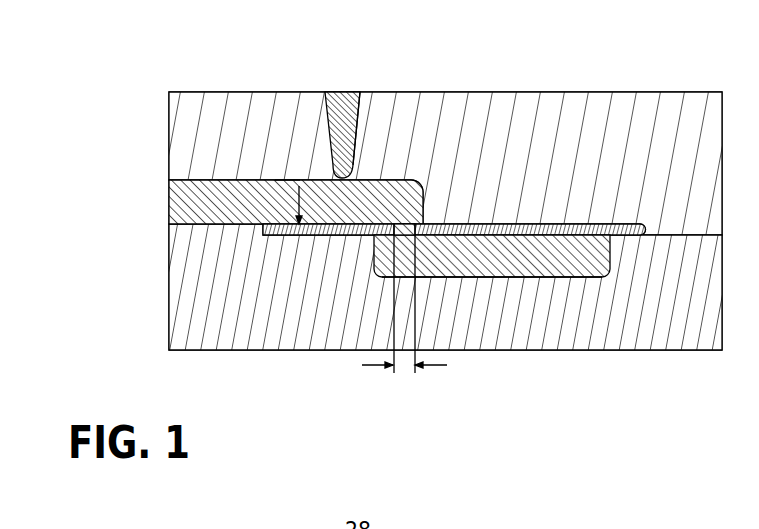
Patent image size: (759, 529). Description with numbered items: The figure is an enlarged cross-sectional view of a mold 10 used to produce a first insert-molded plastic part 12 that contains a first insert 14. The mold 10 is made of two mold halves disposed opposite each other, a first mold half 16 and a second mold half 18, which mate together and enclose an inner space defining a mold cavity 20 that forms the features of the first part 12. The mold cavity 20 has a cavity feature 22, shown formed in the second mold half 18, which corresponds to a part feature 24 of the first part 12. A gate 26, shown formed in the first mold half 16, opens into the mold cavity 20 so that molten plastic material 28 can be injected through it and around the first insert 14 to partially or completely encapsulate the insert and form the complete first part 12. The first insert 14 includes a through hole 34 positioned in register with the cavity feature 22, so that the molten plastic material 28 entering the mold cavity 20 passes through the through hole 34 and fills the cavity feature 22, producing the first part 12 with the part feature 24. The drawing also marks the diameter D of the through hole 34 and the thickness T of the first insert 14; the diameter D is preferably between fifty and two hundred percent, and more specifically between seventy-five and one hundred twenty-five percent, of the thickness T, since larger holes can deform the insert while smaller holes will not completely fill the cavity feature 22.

The mold 10 is at (123, 115).
The first insert-molded plastic part 12 is at (287, 180).
The first insert 14 is at (334, 236).
The first mold half 16 is at (222, 155).
The second mold half 18 is at (222, 275).
The mold cavity 20 is at (318, 178).
The cavity feature 22 is at (538, 279).
The part feature 24 is at (572, 279).
The gate 26 is at (356, 133).
The molten plastic material 28 is at (343, 105).
The through hole 34 is at (403, 232).
The thickness of the insert T is at (298, 235).
The diameter of the through hole D is at (436, 368).